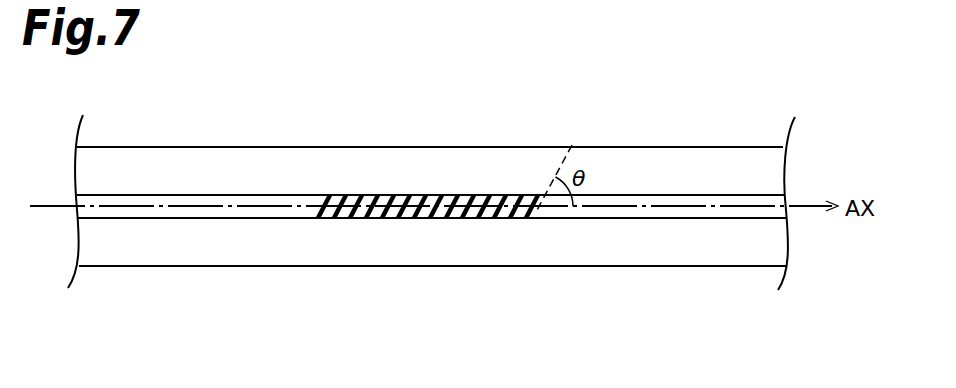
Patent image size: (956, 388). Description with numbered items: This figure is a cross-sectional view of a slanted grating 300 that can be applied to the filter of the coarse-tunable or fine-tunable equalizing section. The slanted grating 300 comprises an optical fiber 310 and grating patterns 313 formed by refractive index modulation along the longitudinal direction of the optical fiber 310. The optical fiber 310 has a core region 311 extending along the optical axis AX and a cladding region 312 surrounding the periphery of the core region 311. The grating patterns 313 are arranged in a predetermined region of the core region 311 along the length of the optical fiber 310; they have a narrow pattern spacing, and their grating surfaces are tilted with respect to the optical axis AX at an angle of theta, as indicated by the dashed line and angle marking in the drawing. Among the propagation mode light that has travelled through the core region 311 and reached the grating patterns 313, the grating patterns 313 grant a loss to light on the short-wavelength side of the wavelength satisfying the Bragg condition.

The slanted grating 300 is at (563, 147).
The optical fiber 310 is at (196, 333).
The core region 311 is at (110, 212).
The cladding region 312 is at (166, 255).
The grating patterns 313 is at (403, 217).